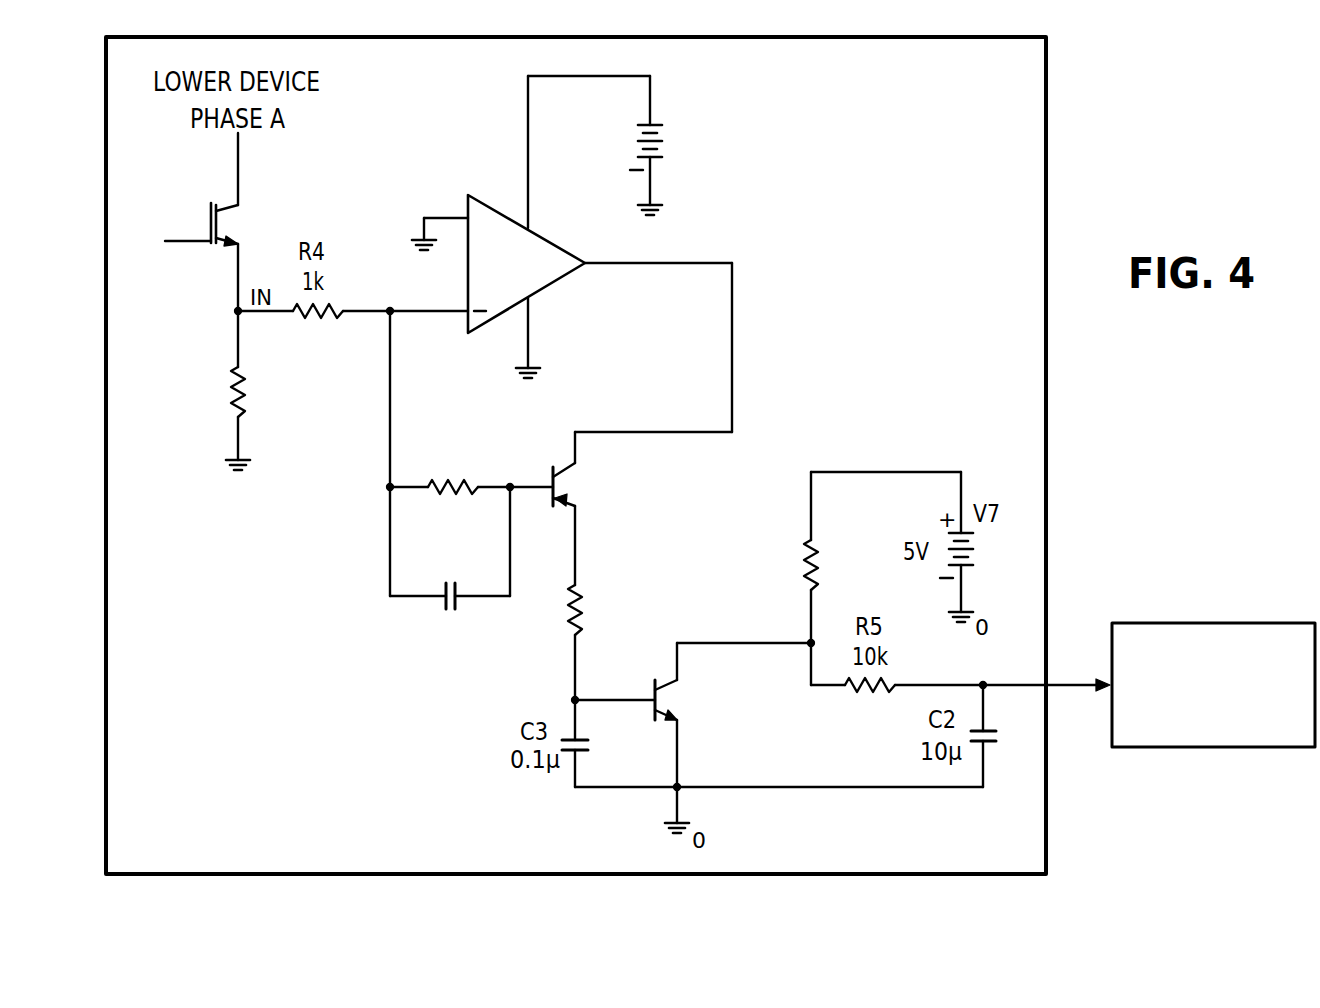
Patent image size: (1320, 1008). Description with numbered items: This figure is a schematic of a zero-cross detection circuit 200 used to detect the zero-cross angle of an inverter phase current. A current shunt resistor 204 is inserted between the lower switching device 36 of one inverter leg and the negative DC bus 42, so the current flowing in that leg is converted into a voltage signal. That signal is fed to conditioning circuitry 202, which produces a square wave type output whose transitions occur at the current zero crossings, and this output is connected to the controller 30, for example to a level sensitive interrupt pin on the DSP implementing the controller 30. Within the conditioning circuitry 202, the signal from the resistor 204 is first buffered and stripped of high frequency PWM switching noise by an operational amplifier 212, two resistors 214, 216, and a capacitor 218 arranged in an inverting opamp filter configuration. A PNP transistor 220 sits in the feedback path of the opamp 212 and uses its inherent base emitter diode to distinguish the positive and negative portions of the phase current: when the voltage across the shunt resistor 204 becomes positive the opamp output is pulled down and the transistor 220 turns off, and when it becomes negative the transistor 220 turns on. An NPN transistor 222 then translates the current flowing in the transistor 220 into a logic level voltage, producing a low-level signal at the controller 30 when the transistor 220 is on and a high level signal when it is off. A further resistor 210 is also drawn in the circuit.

The zero-cross detection circuit 200 is at (1052, 106).
The lower switching device 36 is at (232, 222).
The resistor 204 is at (244, 383).
The negative DC bus 42 is at (233, 468).
The operational amplifier 212 is at (547, 292).
The resistor 216 is at (442, 480).
The PNP transistor 220 is at (570, 489).
The capacitor 218 is at (447, 604).
The conditioning circuitry 202 is at (385, 672).
The resistor 214 is at (567, 607).
The NPN transistor 222 is at (670, 703).
The resistor R1 210 is at (822, 568).
The controller 30 is at (1238, 621).